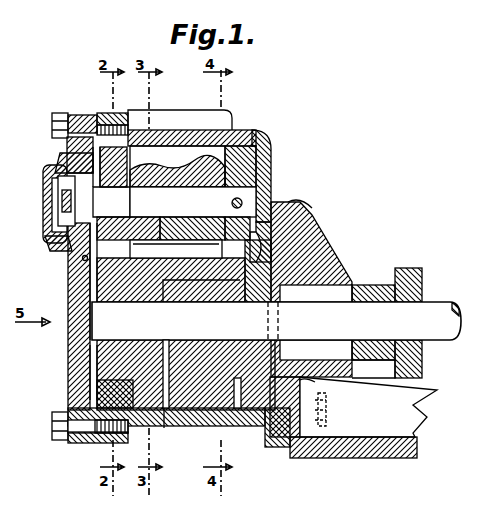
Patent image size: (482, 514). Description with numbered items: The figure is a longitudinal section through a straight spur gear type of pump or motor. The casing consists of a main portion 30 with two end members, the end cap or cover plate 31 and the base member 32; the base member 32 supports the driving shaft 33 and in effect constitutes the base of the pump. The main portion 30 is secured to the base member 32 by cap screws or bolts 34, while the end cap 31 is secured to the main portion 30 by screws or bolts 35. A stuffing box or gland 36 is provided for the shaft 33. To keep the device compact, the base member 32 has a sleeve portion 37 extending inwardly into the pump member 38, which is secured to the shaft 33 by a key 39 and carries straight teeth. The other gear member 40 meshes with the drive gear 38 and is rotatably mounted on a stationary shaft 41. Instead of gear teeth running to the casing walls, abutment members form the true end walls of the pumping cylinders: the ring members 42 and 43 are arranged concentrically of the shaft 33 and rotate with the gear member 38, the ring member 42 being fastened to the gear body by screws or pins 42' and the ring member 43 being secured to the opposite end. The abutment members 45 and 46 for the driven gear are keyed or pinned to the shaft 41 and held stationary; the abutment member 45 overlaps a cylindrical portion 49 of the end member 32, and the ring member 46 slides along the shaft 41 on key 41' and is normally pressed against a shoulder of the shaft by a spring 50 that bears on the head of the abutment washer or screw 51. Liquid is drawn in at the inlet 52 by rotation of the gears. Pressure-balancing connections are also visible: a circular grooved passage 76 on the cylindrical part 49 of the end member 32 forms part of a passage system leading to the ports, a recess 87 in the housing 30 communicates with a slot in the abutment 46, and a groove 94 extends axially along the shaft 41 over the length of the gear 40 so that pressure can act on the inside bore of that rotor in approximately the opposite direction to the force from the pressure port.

The main portion of casing 30 is at (244, 128).
The end cap 31 is at (70, 352).
The base member 32 is at (365, 440).
The driving shaft 33 is at (425, 318).
The cap screws 34 is at (325, 412).
The screws 35 is at (56, 118).
The stuffing box 36 is at (397, 270).
The sleeve portion 37 is at (284, 294).
The pump member 38 is at (160, 428).
The key 39 is at (97, 292).
The gear member 40 is at (198, 155).
The stationary shaft 41 is at (266, 205).
The key 41' is at (187, 202).
The ring member 42 is at (243, 417).
The screws or pins 42' is at (187, 402).
The ring member 43 is at (98, 396).
The abutment member 45 is at (262, 165).
The abutment member 46 is at (66, 152).
The cylindrical part 49 is at (274, 205).
The spring 50 is at (57, 247).
The abutment washer or screw 51 is at (48, 181).
The inlet 52 is at (172, 110).
The circular grooved passage 76 is at (302, 391).
The recess 87 is at (60, 160).
The groove 94 is at (172, 220).